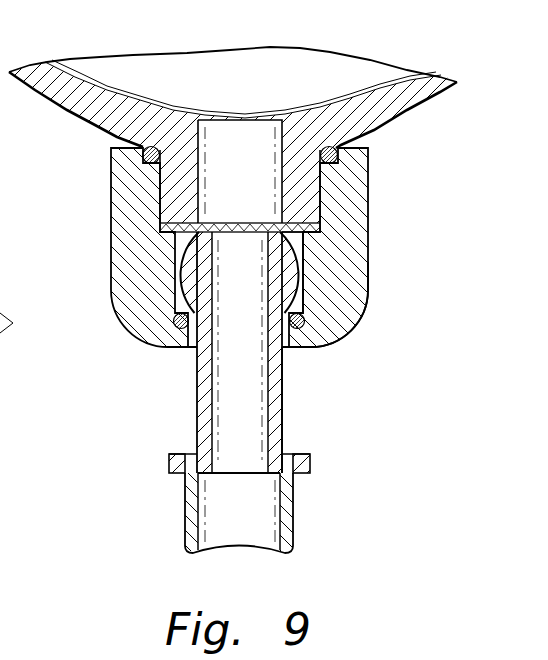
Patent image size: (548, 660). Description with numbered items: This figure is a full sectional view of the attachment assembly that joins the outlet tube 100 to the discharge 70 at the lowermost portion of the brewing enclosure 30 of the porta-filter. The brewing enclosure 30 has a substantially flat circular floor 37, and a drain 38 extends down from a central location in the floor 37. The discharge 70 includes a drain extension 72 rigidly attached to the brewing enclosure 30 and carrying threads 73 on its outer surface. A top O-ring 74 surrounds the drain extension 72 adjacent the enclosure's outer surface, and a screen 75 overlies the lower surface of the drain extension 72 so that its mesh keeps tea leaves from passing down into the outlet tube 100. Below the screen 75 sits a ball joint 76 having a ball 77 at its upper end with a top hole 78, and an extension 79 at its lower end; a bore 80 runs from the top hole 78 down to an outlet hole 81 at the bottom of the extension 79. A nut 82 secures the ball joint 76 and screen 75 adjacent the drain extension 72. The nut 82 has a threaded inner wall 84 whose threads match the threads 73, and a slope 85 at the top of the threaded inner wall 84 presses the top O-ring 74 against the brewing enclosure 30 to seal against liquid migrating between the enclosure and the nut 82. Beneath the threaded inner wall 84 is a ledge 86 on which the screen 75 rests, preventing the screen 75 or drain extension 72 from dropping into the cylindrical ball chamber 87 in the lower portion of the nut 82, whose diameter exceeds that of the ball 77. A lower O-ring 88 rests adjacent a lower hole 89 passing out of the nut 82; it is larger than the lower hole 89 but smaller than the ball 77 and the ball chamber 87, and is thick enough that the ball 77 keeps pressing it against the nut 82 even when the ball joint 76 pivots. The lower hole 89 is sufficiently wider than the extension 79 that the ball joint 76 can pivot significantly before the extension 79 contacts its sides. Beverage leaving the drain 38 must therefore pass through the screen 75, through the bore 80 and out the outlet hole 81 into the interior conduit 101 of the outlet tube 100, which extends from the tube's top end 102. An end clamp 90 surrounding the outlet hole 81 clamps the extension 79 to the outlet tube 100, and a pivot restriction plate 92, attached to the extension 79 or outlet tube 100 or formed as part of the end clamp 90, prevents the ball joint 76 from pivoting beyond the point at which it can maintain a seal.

The brewing enclosure 30 is at (447, 72).
The floor 37 is at (350, 135).
The drain 38 is at (250, 167).
The discharge 70 is at (200, 137).
The drain extension 72 is at (272, 140).
The threads 73 is at (196, 208).
The top O-ring 74 is at (141, 148).
The screen 75 is at (368, 202).
The ball joint 76 is at (272, 380).
The ball 77 is at (303, 256).
The top hole 78 is at (178, 271).
The extension 79 is at (283, 406).
The bore 80 is at (213, 365).
The outlet hole 81 is at (237, 458).
The nut 82 is at (370, 323).
The threaded inner wall 84 is at (204, 214).
The slope 85 is at (368, 170).
The ledge 86 is at (163, 226).
The ball chamber 87 is at (298, 242).
The lower O-ring 88 is at (176, 317).
The lower hole 89 is at (289, 346).
The end clamp 90 is at (168, 468).
The pivot restriction plate 92 is at (311, 461).
The outlet tube 100 is at (184, 517).
The interior conduit 101 is at (263, 544).
The top end 102 is at (188, 453).